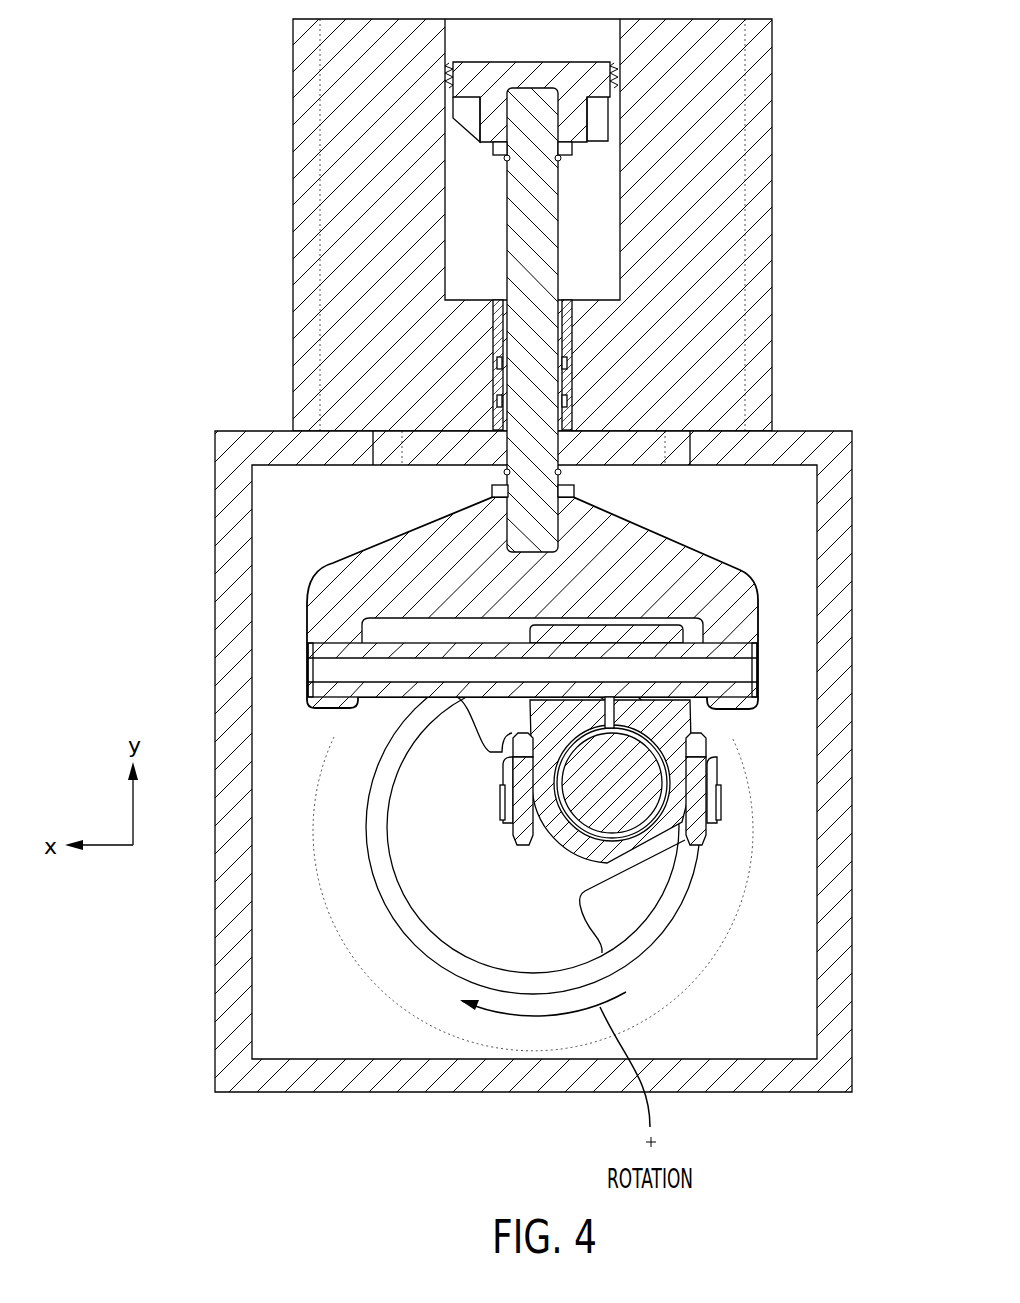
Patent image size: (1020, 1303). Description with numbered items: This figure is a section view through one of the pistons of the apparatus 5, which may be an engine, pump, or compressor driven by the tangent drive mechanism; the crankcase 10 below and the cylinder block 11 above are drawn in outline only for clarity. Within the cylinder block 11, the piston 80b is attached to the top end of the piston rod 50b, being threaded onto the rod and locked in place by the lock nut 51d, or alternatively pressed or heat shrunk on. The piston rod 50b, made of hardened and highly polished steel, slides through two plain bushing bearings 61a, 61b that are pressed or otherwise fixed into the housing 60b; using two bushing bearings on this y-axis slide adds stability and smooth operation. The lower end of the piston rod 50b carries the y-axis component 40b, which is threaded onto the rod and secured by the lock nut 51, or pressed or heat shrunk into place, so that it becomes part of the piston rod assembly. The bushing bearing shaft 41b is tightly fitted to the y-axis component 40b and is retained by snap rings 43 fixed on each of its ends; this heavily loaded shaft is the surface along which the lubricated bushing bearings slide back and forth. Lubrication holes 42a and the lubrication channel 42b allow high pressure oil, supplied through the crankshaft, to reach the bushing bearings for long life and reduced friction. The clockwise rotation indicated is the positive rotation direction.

The apparatus 5 is at (559, 555).
The crankcase 10 is at (842, 743).
The cylinder block 11 is at (760, 173).
The y-axis component 40b is at (642, 553).
The bushing bearing shaft 41b is at (710, 647).
The lubrication holes 42a is at (690, 710).
The lubrication channel 42b is at (643, 637).
The snap rings 43 is at (310, 685).
The piston rod 50b is at (547, 217).
The lock nut 51 is at (575, 491).
The lock nut 51d is at (570, 152).
The housing 60b is at (575, 327).
The plain bushing bearing 61a is at (505, 343).
The plain bushing bearing 61b is at (505, 408).
The piston 80b is at (620, 78).